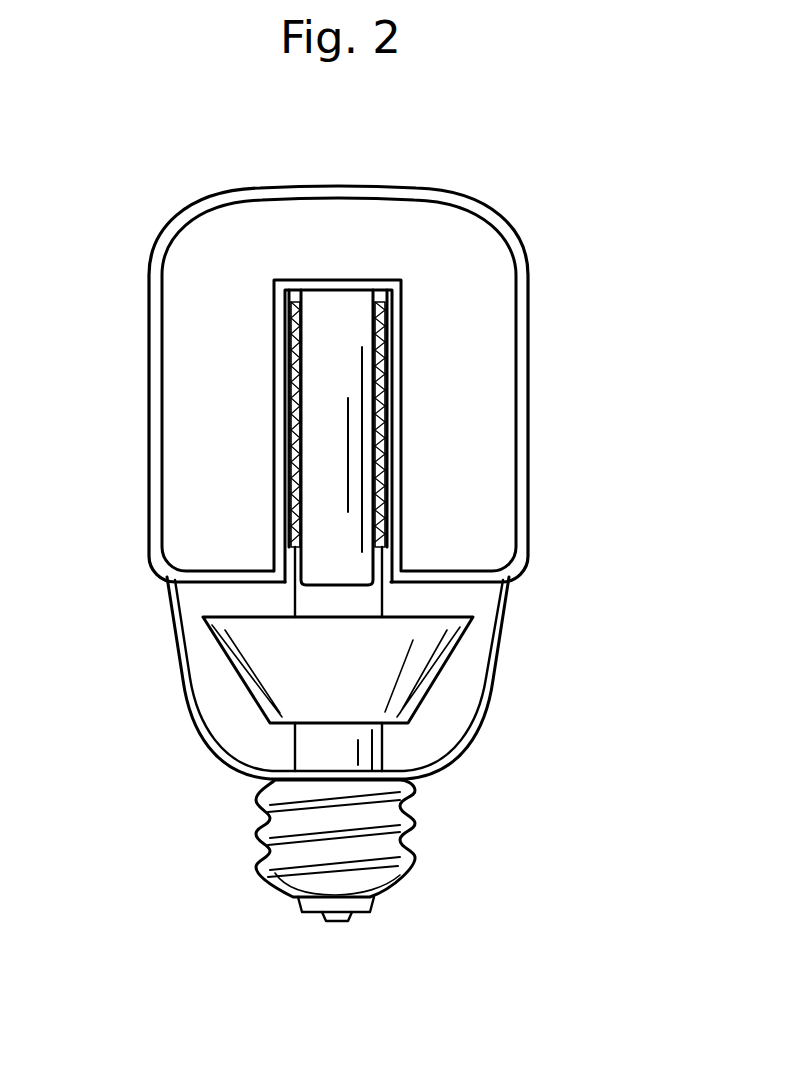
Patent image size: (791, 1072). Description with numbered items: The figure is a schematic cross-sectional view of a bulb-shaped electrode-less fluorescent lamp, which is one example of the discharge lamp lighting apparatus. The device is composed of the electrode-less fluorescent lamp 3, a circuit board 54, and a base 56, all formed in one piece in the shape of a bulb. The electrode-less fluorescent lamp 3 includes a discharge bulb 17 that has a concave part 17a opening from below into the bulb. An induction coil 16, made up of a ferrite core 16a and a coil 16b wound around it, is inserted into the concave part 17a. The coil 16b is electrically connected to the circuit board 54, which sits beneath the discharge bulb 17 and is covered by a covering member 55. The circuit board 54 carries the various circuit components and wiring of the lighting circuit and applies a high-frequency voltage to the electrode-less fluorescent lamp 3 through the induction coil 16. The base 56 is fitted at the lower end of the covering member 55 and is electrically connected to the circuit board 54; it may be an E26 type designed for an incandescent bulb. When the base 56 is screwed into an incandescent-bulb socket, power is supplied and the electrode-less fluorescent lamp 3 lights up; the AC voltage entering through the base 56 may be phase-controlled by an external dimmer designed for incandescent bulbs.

The electrode-less fluorescent lamp 3 is at (531, 264).
The induction coil 16 is at (375, 349).
The ferrite core 16a is at (345, 303).
The coil 16b is at (388, 398).
The discharge bulb 17 is at (530, 418).
The concave part 17a is at (275, 450).
The circuit board 54 is at (397, 675).
The covering member 55 is at (168, 605).
The base 56 is at (415, 850).